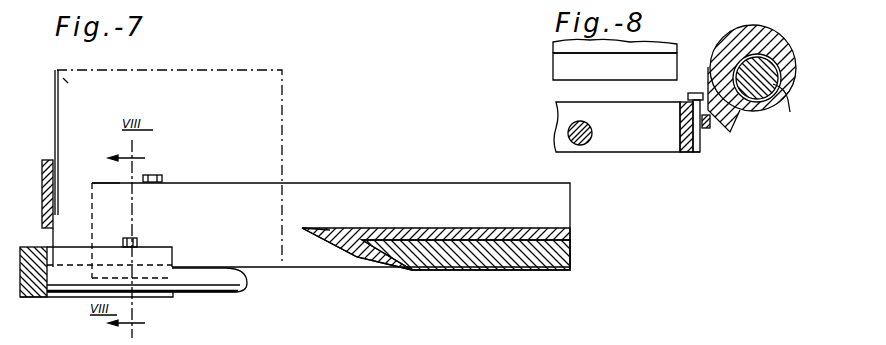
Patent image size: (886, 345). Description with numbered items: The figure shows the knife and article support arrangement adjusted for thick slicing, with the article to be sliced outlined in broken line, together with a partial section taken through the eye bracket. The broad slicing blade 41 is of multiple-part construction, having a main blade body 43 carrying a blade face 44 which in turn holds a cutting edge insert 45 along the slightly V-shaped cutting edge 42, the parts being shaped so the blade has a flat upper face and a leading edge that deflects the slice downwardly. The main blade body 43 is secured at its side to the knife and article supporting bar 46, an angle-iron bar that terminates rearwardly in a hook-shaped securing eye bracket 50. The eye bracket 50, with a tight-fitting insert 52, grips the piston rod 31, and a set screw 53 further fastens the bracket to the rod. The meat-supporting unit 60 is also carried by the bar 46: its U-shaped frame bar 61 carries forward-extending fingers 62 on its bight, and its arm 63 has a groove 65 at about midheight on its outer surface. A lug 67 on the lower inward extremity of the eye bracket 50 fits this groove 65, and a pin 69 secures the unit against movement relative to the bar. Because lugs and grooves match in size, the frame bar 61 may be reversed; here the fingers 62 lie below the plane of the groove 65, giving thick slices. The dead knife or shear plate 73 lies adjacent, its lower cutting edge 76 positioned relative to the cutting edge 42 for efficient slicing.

In FIG. 8, the piston rod 31 is at (786, 98).
In FIG. 7, the slicing blade 41 is at (478, 274).
In FIG. 7, the cutting edge 42 is at (302, 229).
In FIG. 7, the main blade body 43 is at (556, 264).
In FIG. 7, the blade face 44 is at (566, 232).
In FIG. 7, the cutting edge insert 45 is at (322, 229).
In FIG. 7, the knife and article supporting bar 46 is at (410, 193).
In FIG. 7, the securing eye bracket 50 is at (98, 193).
In FIG. 8, the securing eye bracket 50 is at (730, 120).
In FIG. 8, the insert 52 is at (757, 103).
In FIG. 7, the set screw 53 is at (157, 172).
In FIG. 7, the article or meat-supporting unit 60 is at (28, 232).
In FIG. 7, the U-shaped frame bar 61 is at (36, 290).
In FIG. 7, the finger 62 is at (220, 285).
In FIG. 8, the finger 62 is at (592, 140).
In FIG. 7, the arm 63 is at (82, 252).
In FIG. 8, the arm 63 is at (688, 152).
In FIG. 8, the groove 65 is at (680, 128).
In FIG. 8, the lug 67 is at (712, 130).
In FIG. 8, the pin 69 is at (695, 93).
In FIG. 7, the dead knife or shear plate 73 is at (44, 168).
In FIG. 7, the cutting edge of shear plate 76 is at (53, 231).